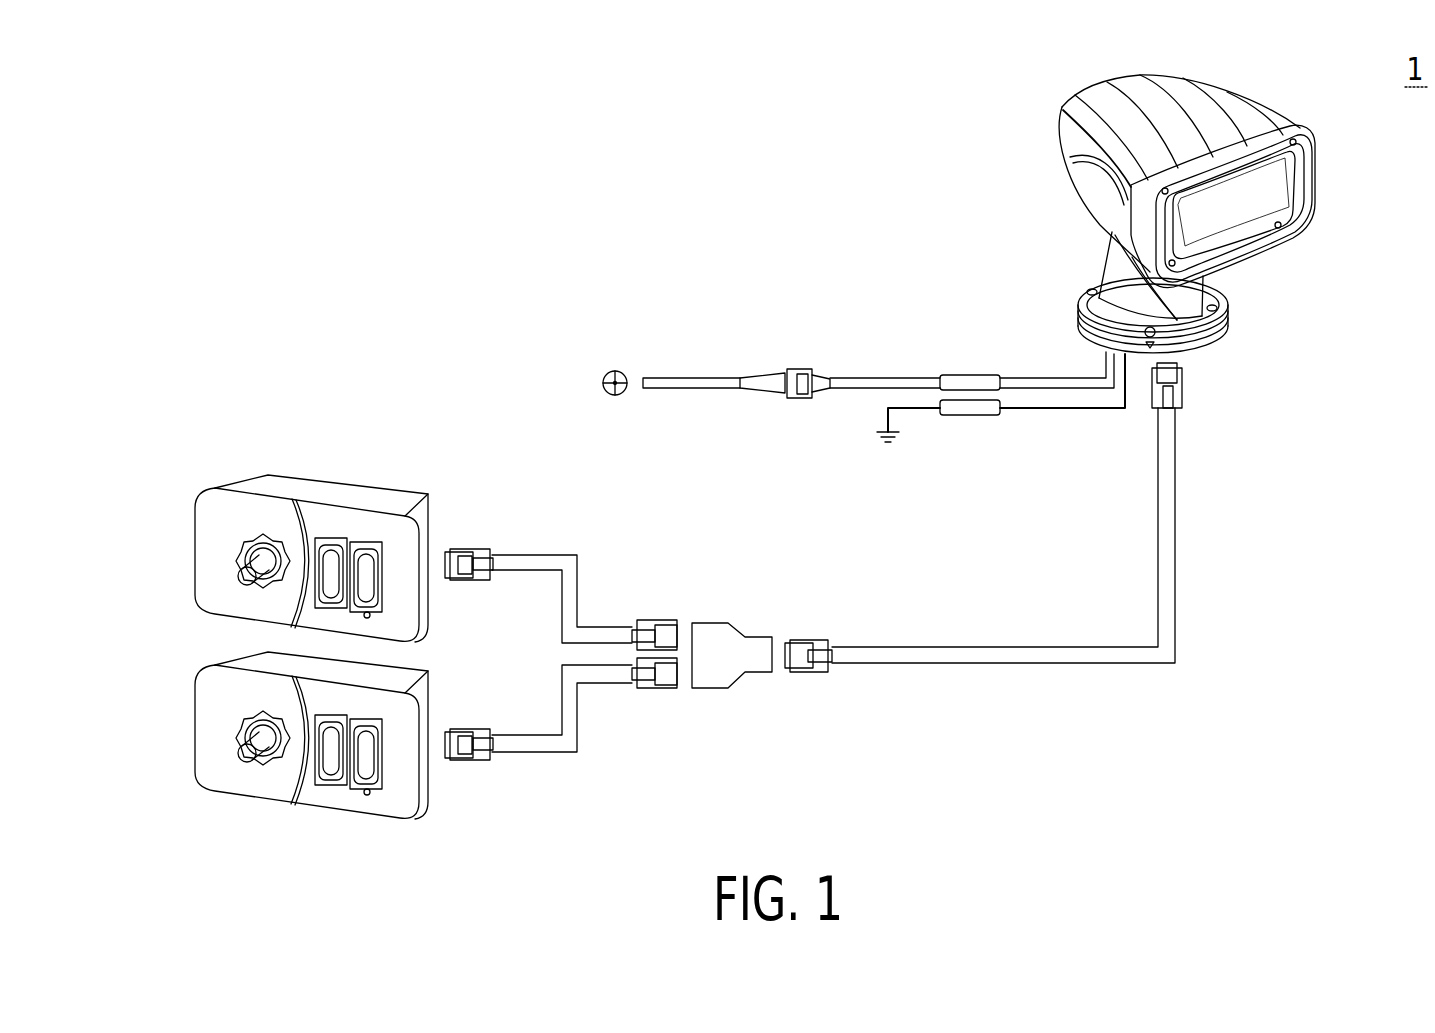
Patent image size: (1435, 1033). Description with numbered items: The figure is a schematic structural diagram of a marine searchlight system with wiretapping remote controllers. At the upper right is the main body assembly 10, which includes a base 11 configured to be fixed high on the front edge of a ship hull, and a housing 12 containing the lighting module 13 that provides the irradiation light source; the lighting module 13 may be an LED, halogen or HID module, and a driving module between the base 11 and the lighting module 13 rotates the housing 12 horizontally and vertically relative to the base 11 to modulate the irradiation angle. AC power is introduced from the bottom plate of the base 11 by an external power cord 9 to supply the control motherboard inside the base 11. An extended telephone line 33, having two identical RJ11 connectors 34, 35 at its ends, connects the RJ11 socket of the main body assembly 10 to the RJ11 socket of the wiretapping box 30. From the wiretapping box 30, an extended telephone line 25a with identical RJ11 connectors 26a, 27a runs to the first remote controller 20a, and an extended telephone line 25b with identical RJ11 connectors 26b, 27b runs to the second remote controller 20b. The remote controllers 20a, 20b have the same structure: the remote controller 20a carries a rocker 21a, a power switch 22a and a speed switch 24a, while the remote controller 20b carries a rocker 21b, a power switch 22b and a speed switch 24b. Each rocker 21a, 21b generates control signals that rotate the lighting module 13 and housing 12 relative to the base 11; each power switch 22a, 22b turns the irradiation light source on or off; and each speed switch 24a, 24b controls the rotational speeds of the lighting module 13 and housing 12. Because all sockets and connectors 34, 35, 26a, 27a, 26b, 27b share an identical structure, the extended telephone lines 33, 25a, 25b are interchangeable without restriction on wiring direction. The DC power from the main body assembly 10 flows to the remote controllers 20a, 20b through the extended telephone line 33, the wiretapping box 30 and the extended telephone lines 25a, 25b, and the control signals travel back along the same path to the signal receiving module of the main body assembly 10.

The external power cord 9 is at (928, 372).
The main body assembly 10 is at (1054, 239).
The base 11 is at (1123, 297).
The housing 12 is at (1080, 133).
The lighting module 13 is at (1240, 203).
The remote controller 20a is at (240, 512).
The remote controller 20b is at (228, 687).
The rocker 21a is at (237, 562).
The rocker 21b is at (233, 760).
The power switch 22a is at (372, 560).
The power switch 22b is at (360, 765).
The speed switch 24a is at (329, 560).
The speed switch 24b is at (322, 758).
The extended telephone line 25a is at (568, 557).
The extended telephone line 25b is at (560, 738).
The RJ11 connector 26a is at (643, 617).
The RJ11 connector 26b is at (660, 687).
The RJ11 connector 27a is at (475, 552).
The RJ11 connector 27b is at (462, 758).
The wiretapping box 30 is at (718, 637).
The extended telephone line 33 is at (1163, 625).
The RJ11 connector 34 is at (1177, 397).
The RJ11 connector 35 is at (817, 668).